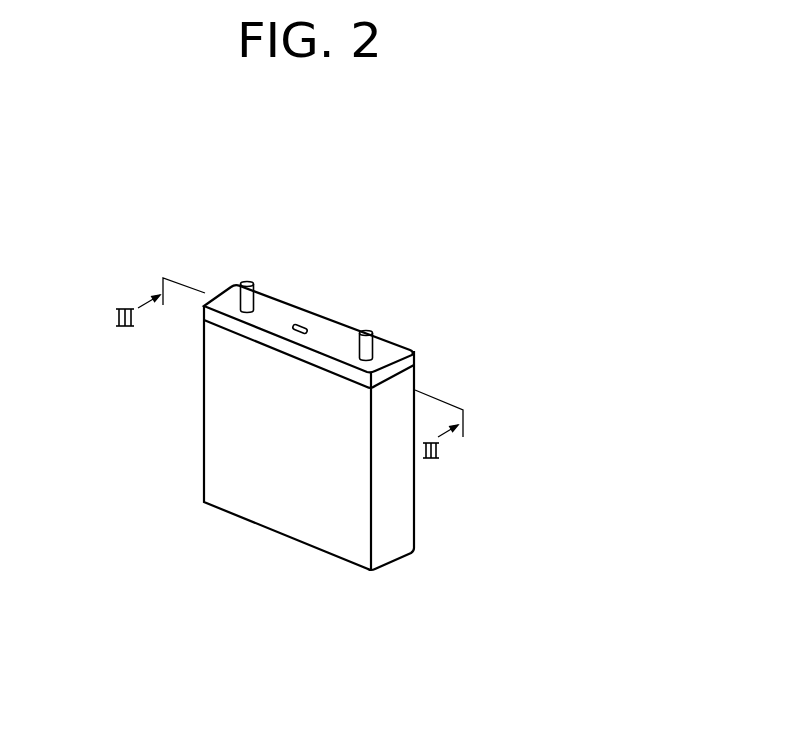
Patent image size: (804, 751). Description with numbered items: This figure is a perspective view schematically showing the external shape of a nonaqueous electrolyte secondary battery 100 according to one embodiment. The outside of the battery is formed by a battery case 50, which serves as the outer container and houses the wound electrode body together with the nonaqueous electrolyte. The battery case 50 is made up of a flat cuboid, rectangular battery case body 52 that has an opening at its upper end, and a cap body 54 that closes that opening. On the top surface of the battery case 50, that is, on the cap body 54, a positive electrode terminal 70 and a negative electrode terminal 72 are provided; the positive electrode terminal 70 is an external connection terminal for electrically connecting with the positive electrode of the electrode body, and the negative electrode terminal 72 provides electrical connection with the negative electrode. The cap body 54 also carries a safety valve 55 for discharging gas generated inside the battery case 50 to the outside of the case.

The nonaqueous electrolyte secondary battery 100 is at (532, 222).
The battery case 50 is at (290, 512).
The battery case body 52 is at (410, 526).
The cap body 54 is at (418, 360).
The safety valve 55 is at (298, 323).
The positive electrode terminal 70 is at (247, 283).
The negative electrode terminal 72 is at (367, 331).